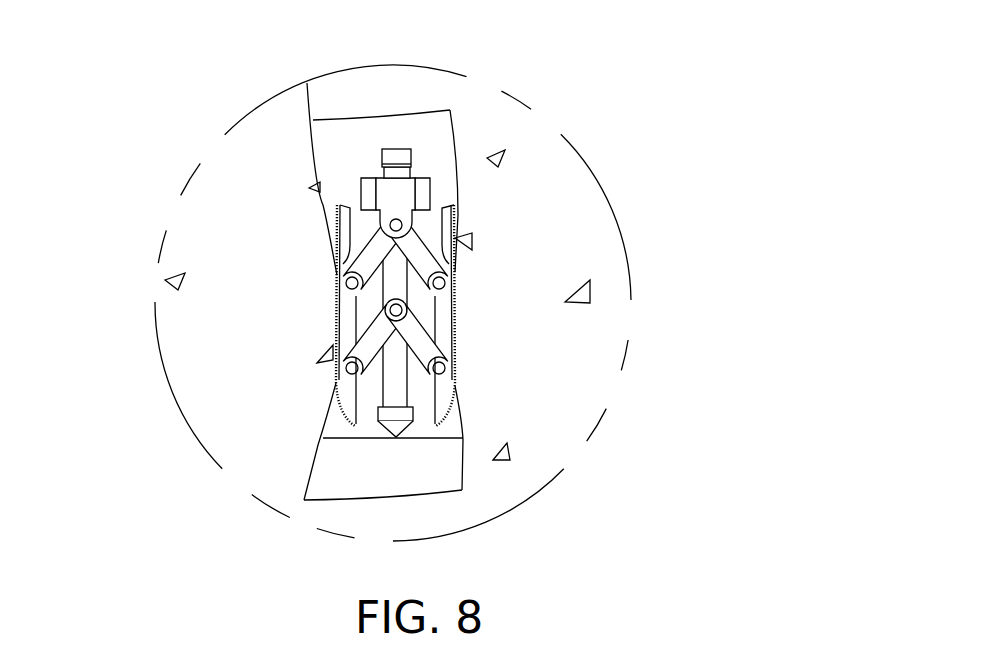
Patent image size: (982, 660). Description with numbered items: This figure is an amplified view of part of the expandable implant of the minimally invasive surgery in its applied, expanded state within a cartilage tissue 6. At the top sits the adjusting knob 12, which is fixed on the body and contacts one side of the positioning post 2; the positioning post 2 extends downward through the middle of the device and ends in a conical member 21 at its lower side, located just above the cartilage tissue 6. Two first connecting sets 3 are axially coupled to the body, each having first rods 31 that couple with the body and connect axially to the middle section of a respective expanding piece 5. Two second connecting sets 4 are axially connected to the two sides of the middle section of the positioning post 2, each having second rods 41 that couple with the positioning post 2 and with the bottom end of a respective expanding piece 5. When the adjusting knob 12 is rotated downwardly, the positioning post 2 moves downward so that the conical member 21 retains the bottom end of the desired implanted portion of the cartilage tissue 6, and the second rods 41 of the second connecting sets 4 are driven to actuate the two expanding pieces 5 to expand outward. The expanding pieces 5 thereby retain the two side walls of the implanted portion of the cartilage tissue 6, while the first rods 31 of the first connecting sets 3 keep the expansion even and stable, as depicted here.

The adjusting knob 12 is at (398, 155).
The first connecting set 3 is at (577, 234).
The first rod 31 is at (370, 252).
The expanding piece 5 is at (348, 309).
The second connecting set 4 is at (232, 339).
The second rod 41 is at (370, 348).
The positioning post 2 is at (400, 388).
The conical member 21 is at (407, 415).
The cartilage tissue 6 is at (342, 473).